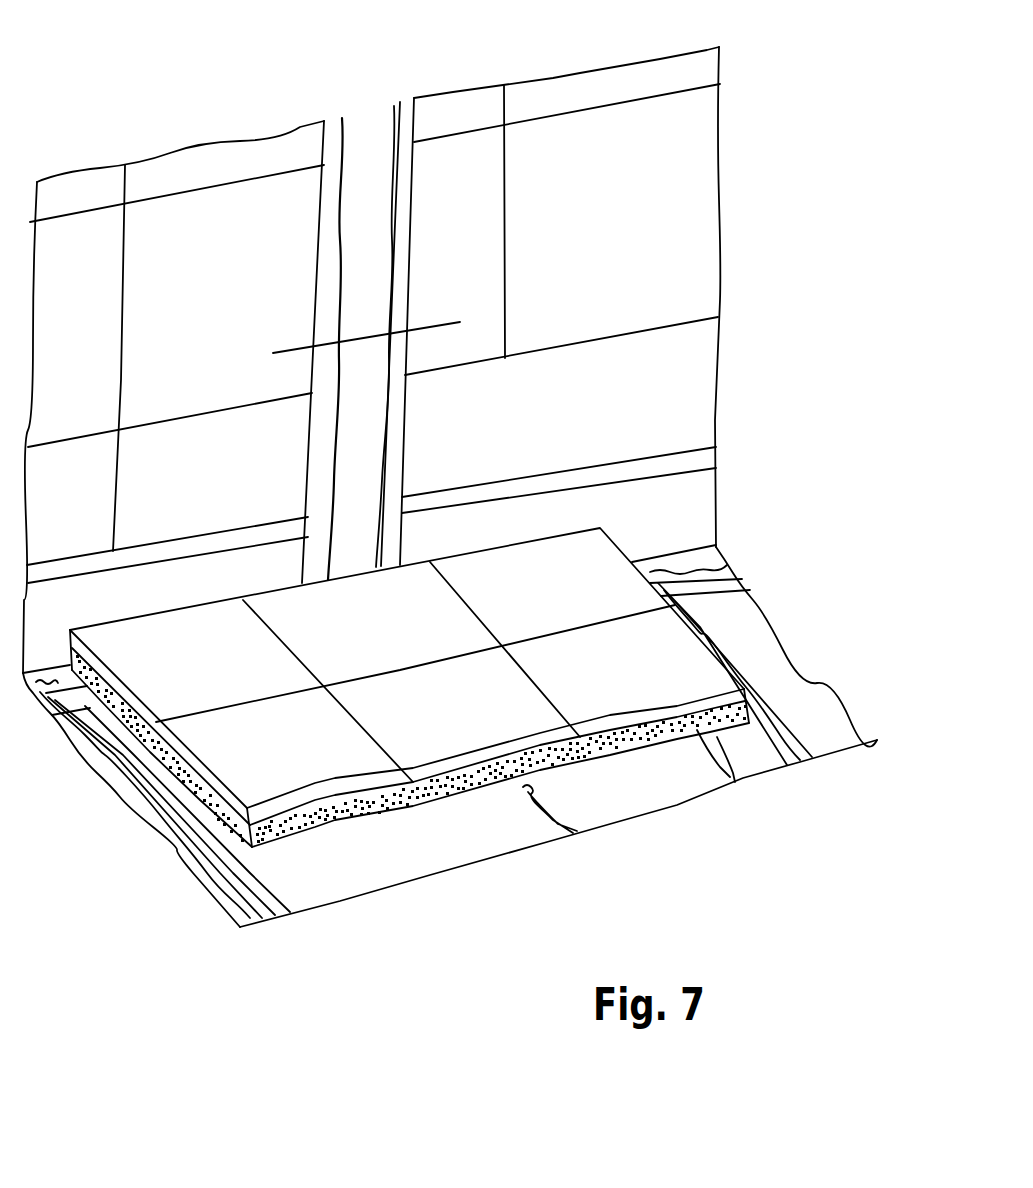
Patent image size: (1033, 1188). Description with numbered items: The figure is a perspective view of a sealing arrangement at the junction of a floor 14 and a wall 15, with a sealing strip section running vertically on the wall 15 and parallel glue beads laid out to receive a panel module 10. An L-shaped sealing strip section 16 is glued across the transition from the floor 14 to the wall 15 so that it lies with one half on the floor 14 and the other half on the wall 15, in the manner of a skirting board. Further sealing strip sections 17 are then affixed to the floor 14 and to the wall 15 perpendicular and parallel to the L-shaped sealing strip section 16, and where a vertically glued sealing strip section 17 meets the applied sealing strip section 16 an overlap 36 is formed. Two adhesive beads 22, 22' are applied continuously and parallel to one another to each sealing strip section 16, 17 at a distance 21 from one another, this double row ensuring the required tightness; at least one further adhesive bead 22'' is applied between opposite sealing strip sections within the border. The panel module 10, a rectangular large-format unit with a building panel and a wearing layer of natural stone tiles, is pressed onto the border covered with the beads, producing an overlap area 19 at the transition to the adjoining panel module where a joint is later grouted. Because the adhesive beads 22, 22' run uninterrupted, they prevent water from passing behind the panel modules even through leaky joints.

The panel module 10 is at (207, 763).
The floor 14 is at (810, 658).
The wall 15 is at (657, 207).
The sealing strip section 16 is at (693, 493).
The sealing strip section 17 is at (322, 228).
The overlap area 19 is at (325, 104).
The distance 21 is at (367, 347).
The adhesive bead 22 is at (389, 510).
The adhesive bead 22' is at (594, 426).
The further adhesive bead 22'' is at (527, 855).
The overlap 36 is at (417, 548).